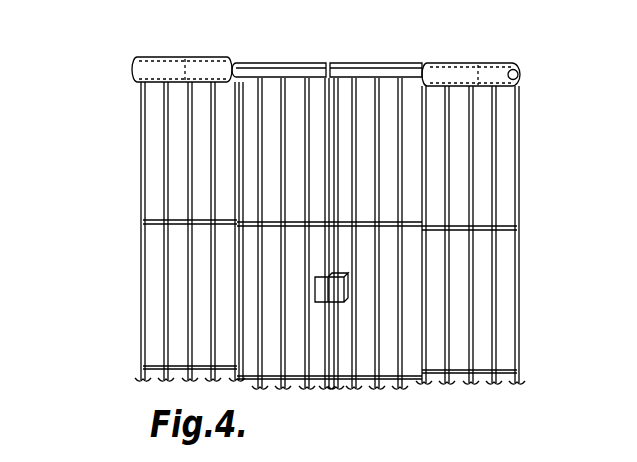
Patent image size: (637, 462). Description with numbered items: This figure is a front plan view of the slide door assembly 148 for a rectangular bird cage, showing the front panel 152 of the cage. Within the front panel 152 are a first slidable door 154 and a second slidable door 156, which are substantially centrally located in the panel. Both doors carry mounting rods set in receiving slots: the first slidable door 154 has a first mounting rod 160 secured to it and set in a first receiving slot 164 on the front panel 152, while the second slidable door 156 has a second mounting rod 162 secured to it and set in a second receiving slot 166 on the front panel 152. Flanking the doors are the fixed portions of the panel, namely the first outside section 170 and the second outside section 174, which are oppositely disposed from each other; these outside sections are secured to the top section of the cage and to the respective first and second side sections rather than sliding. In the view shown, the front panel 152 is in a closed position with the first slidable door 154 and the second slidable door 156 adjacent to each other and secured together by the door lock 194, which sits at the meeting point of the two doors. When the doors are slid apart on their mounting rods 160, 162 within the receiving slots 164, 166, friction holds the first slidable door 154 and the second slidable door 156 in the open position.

The slide door assembly 148 is at (113, 62).
The front panel 152 is at (108, 285).
The first slidable door 154 is at (260, 172).
The second slidable door 156 is at (398, 190).
The first mounting rod 160 is at (243, 67).
The second mounting rod 162 is at (445, 70).
The first receiving slot 164 is at (173, 57).
The second receiving slot 166 is at (493, 62).
The first outside section 170 is at (190, 248).
The second outside section 174 is at (490, 206).
The door lock 194 is at (344, 290).